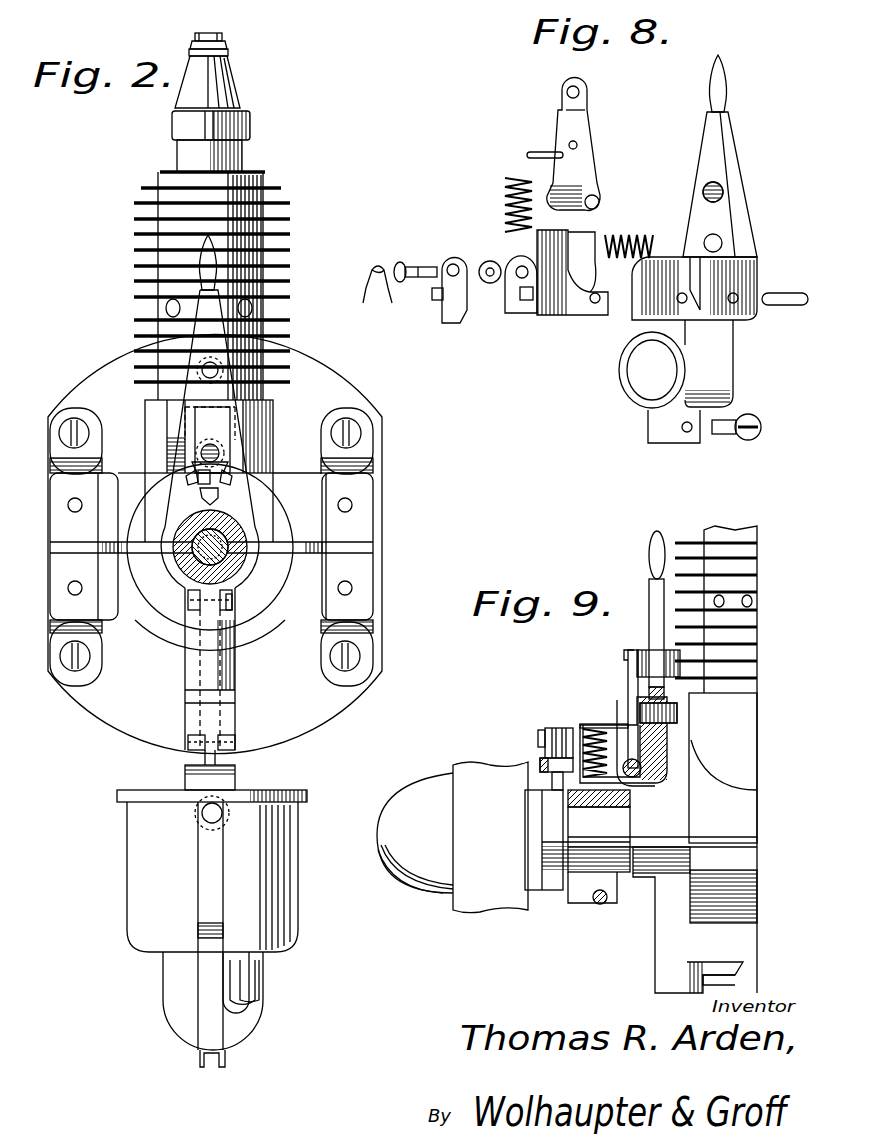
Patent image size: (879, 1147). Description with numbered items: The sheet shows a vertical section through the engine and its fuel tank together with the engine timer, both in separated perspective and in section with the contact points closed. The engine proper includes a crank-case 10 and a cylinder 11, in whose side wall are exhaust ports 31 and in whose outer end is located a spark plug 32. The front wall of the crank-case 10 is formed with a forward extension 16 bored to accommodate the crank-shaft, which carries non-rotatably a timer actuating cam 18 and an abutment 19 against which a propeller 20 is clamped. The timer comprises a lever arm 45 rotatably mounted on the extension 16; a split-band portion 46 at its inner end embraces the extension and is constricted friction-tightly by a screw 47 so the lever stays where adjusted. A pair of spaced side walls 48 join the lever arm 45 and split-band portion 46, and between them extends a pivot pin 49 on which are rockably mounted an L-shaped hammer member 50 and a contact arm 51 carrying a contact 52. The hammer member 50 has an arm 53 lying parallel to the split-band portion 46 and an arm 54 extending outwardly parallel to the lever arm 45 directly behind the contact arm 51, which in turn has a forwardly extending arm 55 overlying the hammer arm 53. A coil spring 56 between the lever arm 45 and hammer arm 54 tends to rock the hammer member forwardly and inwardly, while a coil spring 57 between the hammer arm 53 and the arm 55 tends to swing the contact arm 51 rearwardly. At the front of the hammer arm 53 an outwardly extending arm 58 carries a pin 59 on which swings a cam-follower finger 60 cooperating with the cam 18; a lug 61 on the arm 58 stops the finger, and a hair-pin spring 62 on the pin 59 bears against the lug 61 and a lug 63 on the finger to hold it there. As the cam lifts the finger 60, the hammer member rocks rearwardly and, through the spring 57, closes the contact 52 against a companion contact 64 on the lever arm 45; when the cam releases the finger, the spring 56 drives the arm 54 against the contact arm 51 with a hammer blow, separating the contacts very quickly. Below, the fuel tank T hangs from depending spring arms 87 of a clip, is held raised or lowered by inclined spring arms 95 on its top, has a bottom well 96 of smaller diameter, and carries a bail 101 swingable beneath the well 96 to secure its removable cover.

In FIG. 2, the crank-case 10 is at (152, 590).
In FIG. 9, the crank-case 10 is at (727, 915).
In FIG. 2, the cylinder 11 is at (165, 210).
In FIG. 9, the cylinder 11 is at (747, 653).
In FIG. 9, the forward extension 16 is at (576, 872).
In FIG. 2, the timer actuating cam 18 is at (222, 506).
In FIG. 9, the timer actuating cam 18 is at (555, 808).
In FIG. 9, the abutment 19 is at (548, 847).
In FIG. 9, the propeller 20 is at (498, 905).
In FIG. 2, the exhaust ports 31 is at (165, 308).
In FIG. 2, the spark plug 32 is at (238, 150).
In FIG. 8, the lever arm 45 is at (730, 128).
In FIG. 9, the lever arm 45 is at (649, 590).
In FIG. 2, the split-band portion 46 is at (240, 565).
In FIG. 8, the split-band portion 46 is at (622, 375).
In FIG. 9, the split-band portion 46 is at (617, 806).
In FIG. 2, the screw 47 is at (232, 607).
In FIG. 8, the screw 47 is at (752, 414).
In FIG. 9, the screw 47 is at (603, 904).
In FIG. 2, the side walls 48 is at (172, 455).
In FIG. 8, the side walls 48 is at (698, 262).
In FIG. 8, the pivot pin 49 is at (783, 305).
In FIG. 9, the pivot pin 49 is at (662, 780).
In FIG. 8, the hammer member 50 is at (575, 312).
In FIG. 9, the hammer member 50 is at (610, 807).
In FIG. 8, the contact arm 51 is at (590, 160).
In FIG. 9, the contact arm 51 is at (629, 683).
In FIG. 9, the contact 52 is at (626, 656).
In FIG. 9, the hammer arm 53 is at (590, 805).
In FIG. 8, the hammer arm 54 is at (583, 235).
In FIG. 9, the hammer arm 54 is at (667, 746).
In FIG. 8, the forwardly extending arm 55 is at (549, 152).
In FIG. 9, the forwardly extending arm 55 is at (627, 724).
In FIG. 8, the coil spring 56 is at (645, 232).
In FIG. 9, the coil spring 56 is at (681, 714).
In FIG. 8, the coil spring 57 is at (505, 205).
In FIG. 9, the coil spring 57 is at (581, 729).
In FIG. 8, the outwardly extending arm 58 is at (520, 262).
In FIG. 9, the outwardly extending arm 58 is at (558, 728).
In FIG. 8, the pin 59 is at (410, 265).
In FIG. 9, the pin 59 is at (538, 736).
In FIG. 2, the cam-follower finger 60 is at (205, 498).
In FIG. 8, the cam-follower finger 60 is at (450, 322).
In FIG. 2, the lug 61 is at (232, 476).
In FIG. 8, the lug 61 is at (526, 300).
In FIG. 9, the lug 61 is at (548, 768).
In FIG. 2, the spring 62 is at (186, 476).
In FIG. 8, the spring 62 is at (363, 283).
In FIG. 9, the spring 62 is at (540, 762).
In FIG. 2, the lug 63 is at (198, 480).
In FIG. 8, the lug 63 is at (432, 295).
In FIG. 8, the companion contact 64 is at (705, 185).
In FIG. 9, the companion contact 64 is at (643, 650).
In FIG. 2, the spring arms 87 is at (190, 720).
In FIG. 2, the spring arms 95 is at (232, 780).
In FIG. 2, the well 96 is at (165, 1004).
In FIG. 2, the bail 101 is at (213, 918).
In FIG. 2, the fuel tank T is at (135, 868).